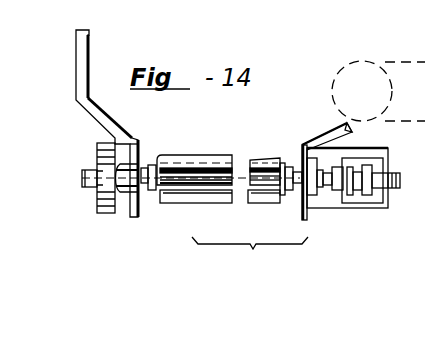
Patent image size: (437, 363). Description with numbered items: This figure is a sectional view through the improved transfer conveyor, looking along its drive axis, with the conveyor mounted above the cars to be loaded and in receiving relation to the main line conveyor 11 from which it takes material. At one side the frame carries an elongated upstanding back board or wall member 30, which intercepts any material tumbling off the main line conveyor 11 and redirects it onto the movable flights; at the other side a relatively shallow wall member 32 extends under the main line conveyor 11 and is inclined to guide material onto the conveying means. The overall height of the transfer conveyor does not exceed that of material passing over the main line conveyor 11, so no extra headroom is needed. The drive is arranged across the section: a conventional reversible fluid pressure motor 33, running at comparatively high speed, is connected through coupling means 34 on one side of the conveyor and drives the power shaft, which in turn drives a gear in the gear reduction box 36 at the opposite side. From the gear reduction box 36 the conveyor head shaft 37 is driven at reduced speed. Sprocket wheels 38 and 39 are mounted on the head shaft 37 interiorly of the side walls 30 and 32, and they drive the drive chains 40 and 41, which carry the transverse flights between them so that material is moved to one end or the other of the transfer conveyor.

The main line conveyor 11 is at (402, 128).
The back board or wall member 30 is at (90, 63).
The wall member 32 is at (322, 132).
The reversible fluid pressure motor 33 is at (380, 187).
The coupling means 34 is at (342, 162).
The gear reduction box 36 is at (100, 208).
The conveyor head shaft 37 is at (254, 158).
The sprocket wheel 38 is at (152, 188).
The sprocket wheel 39 is at (280, 203).
The drive chain 40 is at (151, 170).
The drive chain 41 is at (290, 160).